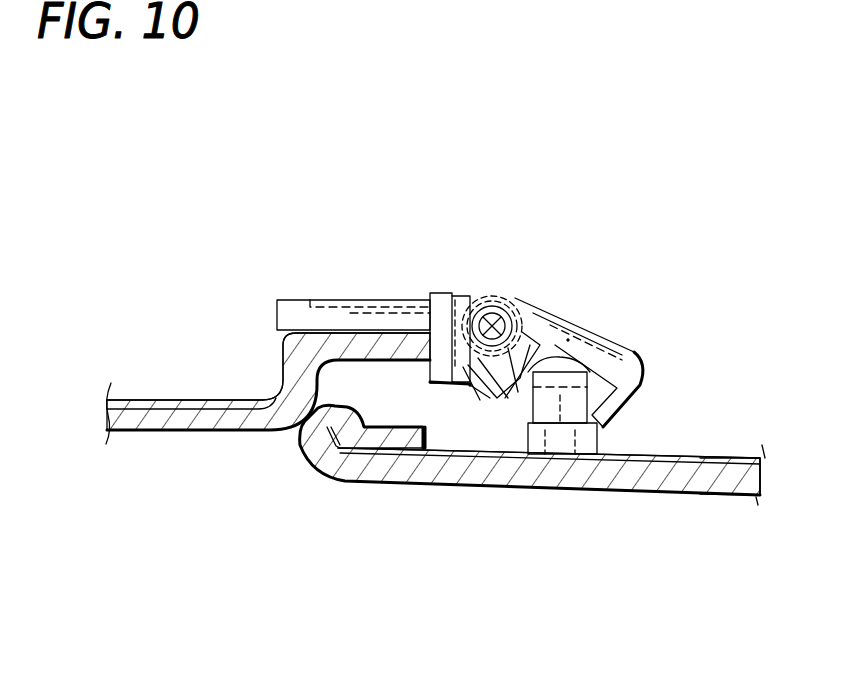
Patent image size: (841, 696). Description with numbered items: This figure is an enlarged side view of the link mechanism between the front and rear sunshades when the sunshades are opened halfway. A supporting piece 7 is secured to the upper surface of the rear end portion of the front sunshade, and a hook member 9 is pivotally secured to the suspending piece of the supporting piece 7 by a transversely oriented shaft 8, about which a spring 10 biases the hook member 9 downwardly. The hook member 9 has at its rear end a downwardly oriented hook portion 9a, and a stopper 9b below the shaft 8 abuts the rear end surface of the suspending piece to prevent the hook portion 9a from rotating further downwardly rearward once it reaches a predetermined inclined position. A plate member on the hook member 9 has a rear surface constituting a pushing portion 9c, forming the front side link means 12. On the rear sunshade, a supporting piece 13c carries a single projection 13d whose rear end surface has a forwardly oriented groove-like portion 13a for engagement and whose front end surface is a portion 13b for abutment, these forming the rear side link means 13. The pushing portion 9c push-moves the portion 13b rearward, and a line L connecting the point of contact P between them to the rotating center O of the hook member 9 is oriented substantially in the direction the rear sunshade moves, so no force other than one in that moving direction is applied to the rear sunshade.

The supporting piece 7 is at (326, 297).
The spring 10 is at (448, 292).
The rotating center O is at (474, 297).
The front side link means 12 is at (497, 293).
The shaft 8 is at (505, 298).
The point of contact P is at (568, 340).
The line L is at (470, 386).
The hook member 9 is at (610, 340).
The hook portion 9a is at (638, 397).
The stopper 9b is at (450, 383).
The pushing portion 9c is at (468, 382).
The rear side link means 13 is at (573, 483).
The groove-like portion for engagement 13a is at (548, 470).
The portion for abutment 13b is at (496, 470).
The supporting piece 13c is at (668, 470).
The projection 13d is at (580, 345).